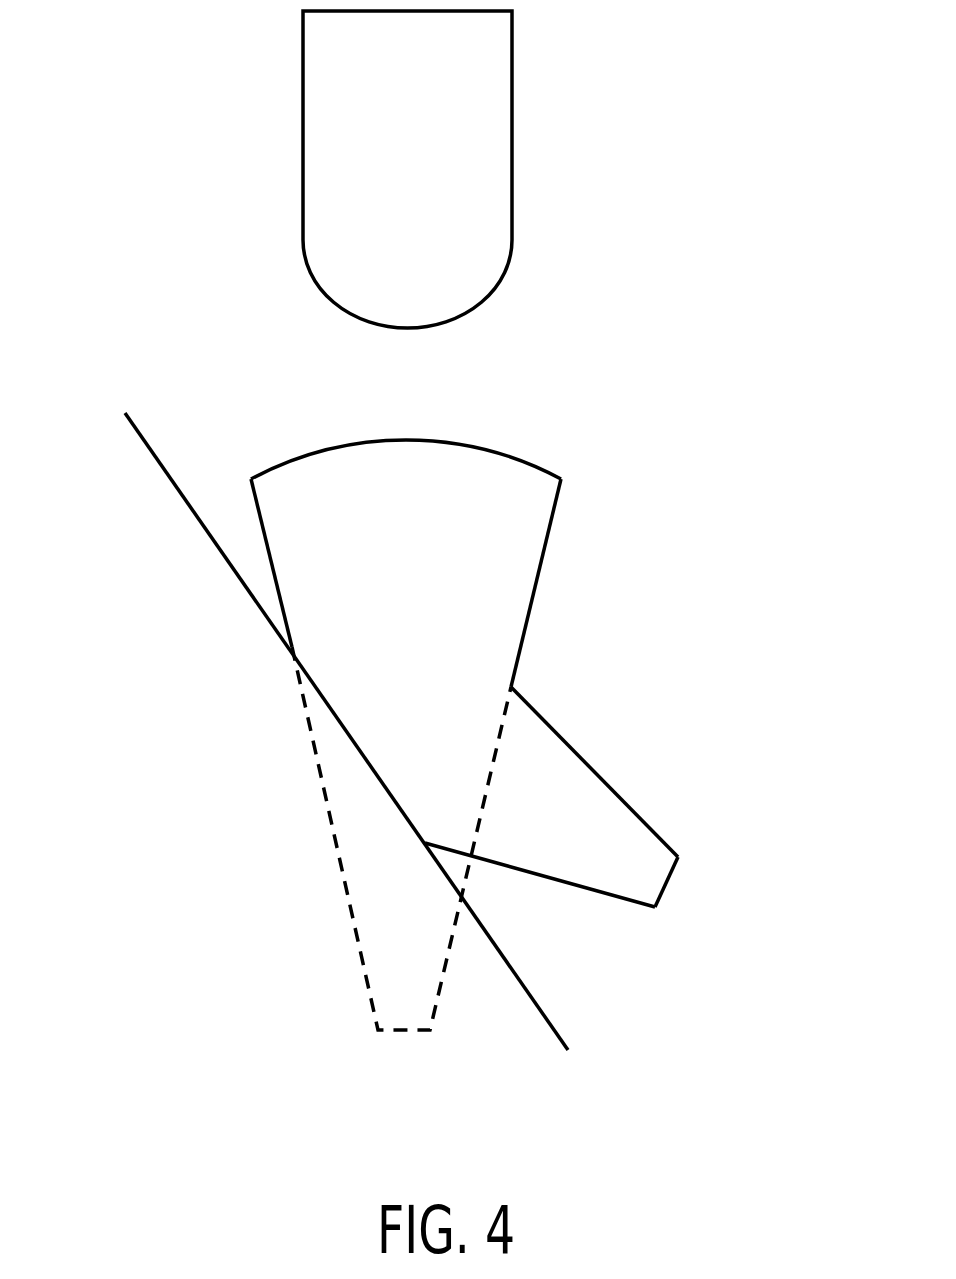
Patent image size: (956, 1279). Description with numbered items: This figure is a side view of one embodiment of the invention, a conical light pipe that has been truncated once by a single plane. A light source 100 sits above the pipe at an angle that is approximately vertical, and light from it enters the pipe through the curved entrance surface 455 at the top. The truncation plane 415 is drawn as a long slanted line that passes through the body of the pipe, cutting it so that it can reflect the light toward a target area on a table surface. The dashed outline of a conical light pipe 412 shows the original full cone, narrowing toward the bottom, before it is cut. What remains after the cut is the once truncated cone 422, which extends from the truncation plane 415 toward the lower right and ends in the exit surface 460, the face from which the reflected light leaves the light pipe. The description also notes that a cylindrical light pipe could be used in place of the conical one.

The light source 100 is at (512, 143).
The entrance surface 455 is at (502, 452).
The truncation plane 415 is at (197, 513).
The once truncated cone 422 is at (585, 797).
The exit surface 460 is at (670, 883).
The outline of a conical light pipe 412 is at (370, 900).